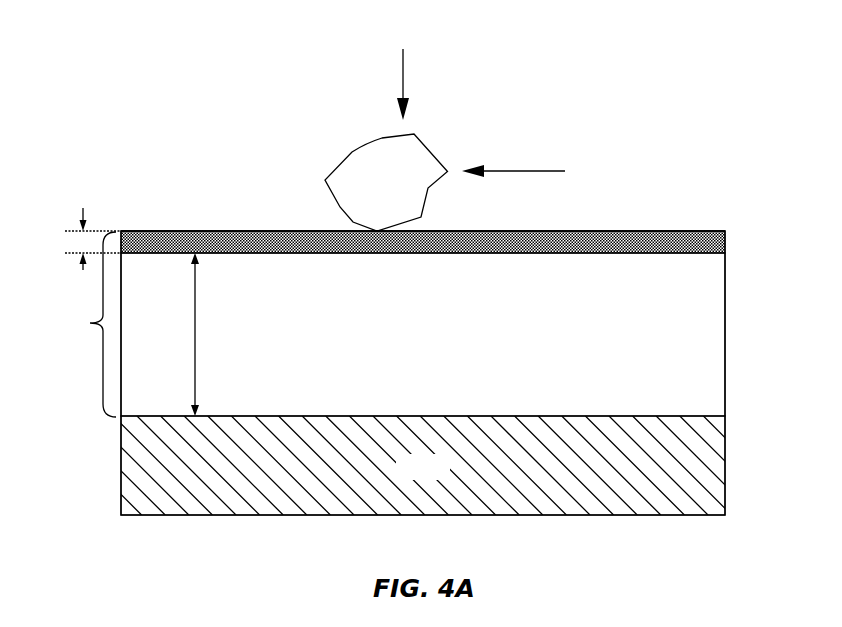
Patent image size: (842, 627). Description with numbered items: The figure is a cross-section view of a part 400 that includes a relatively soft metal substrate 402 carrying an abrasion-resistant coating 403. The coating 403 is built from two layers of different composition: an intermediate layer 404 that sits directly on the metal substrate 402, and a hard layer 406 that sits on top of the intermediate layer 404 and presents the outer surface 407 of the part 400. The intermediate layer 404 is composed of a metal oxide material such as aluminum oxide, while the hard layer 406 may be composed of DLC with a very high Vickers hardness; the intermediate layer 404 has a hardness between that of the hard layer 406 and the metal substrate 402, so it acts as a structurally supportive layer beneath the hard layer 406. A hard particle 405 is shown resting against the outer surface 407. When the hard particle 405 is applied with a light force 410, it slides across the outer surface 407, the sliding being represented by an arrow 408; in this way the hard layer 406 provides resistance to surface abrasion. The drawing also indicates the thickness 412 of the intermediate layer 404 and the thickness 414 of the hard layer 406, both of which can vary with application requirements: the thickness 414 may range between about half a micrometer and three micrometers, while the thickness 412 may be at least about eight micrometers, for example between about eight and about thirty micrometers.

The part 400 is at (166, 198).
The metal substrate 402 is at (437, 476).
The abrasion-resistant coating 403 is at (85, 324).
The intermediate layer 404 is at (438, 345).
The hard particle 405 is at (402, 193).
The hard layer 406 is at (727, 240).
The outer surface 407 is at (640, 231).
The arrow 408 is at (513, 156).
The light force 410 is at (418, 84).
The thickness of intermediate layer 412 is at (195, 334).
The thickness of hard layer 414 is at (83, 270).